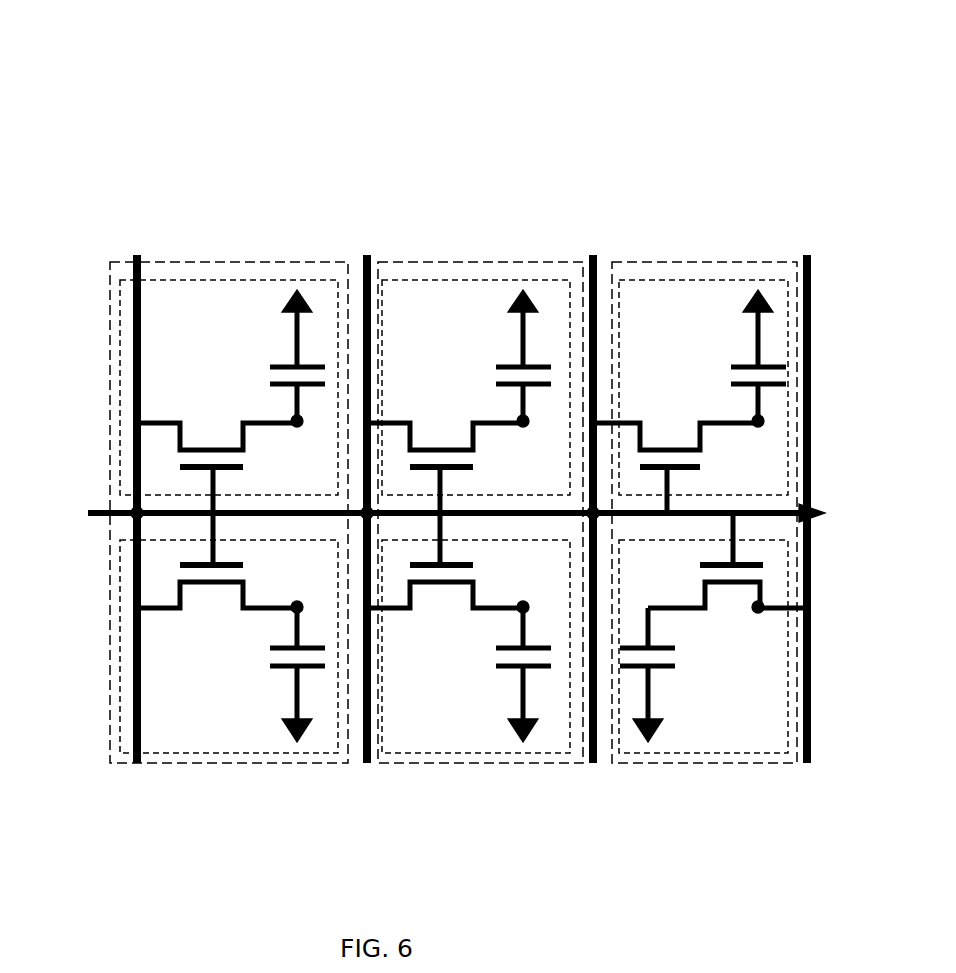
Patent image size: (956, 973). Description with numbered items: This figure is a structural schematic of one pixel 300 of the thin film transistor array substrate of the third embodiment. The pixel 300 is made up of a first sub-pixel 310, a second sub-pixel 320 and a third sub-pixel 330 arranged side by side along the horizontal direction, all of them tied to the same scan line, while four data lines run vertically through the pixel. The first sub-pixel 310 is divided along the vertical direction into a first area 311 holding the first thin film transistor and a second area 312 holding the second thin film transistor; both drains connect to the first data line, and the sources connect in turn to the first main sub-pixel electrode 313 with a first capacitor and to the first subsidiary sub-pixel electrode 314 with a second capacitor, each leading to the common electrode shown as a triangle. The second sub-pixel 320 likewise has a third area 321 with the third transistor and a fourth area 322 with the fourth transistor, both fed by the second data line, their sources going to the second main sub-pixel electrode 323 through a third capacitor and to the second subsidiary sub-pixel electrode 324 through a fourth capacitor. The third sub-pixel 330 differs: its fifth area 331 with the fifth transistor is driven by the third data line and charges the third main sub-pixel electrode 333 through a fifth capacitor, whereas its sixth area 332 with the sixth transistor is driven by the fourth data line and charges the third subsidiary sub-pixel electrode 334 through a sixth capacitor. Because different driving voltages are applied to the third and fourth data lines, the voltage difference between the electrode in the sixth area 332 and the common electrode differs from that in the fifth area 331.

The pixel 300 is at (452, 47).
The first sub-pixel 310 is at (248, 262).
The first area 311 is at (188, 280).
The second area 312 is at (235, 753).
The first main sub-pixel electrode 313 is at (297, 426).
The first subsidiary sub-pixel electrode 314 is at (300, 600).
The second sub-pixel 320 is at (494, 262).
The third area 321 is at (436, 280).
The fourth area 322 is at (452, 753).
The second main sub-pixel electrode 323 is at (523, 426).
The second subsidiary sub-pixel electrode 324 is at (526, 600).
The third sub-pixel 330 is at (705, 262).
The fifth area 331 is at (648, 280).
The sixth area 332 is at (693, 753).
The third main sub-pixel electrode 333 is at (758, 426).
The third subsidiary sub-pixel electrode 334 is at (760, 614).